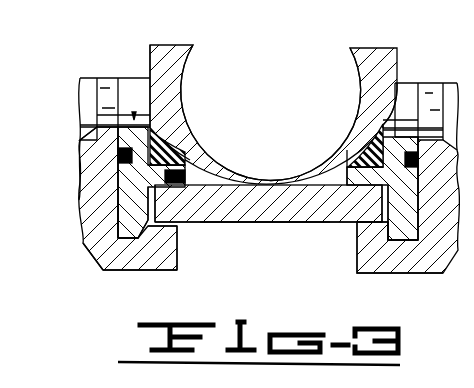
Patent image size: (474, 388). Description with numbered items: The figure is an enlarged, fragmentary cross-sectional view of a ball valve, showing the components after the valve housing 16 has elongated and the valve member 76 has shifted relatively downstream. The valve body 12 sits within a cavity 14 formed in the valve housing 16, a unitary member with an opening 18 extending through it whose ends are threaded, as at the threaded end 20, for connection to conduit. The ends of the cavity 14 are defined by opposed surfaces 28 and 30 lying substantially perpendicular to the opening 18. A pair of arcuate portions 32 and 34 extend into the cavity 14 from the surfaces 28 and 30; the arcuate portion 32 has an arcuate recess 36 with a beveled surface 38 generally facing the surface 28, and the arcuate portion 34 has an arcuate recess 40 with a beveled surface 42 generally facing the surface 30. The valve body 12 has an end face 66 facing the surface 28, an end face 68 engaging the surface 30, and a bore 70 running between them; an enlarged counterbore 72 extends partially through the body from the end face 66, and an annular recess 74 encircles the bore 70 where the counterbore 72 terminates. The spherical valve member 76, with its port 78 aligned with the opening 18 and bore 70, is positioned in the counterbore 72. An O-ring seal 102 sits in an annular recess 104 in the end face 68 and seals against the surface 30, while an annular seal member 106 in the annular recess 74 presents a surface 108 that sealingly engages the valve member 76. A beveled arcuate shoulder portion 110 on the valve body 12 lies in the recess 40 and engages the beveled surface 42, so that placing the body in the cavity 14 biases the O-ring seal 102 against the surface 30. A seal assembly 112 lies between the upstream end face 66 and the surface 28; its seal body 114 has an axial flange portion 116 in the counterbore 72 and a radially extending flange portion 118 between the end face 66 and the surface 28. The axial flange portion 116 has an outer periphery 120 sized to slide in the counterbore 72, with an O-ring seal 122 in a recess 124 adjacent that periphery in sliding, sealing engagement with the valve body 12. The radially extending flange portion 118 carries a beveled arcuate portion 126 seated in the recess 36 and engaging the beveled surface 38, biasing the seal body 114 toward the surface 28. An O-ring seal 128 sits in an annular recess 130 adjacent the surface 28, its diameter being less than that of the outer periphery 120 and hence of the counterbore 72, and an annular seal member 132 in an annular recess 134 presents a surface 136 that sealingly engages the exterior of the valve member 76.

The valve body 12 is at (253, 224).
The cavity 14 is at (253, 264).
The valve housing 16 is at (118, 271).
The opening 18 is at (102, 80).
The threaded end 20 is at (84, 88).
The surface 28 is at (118, 210).
The surface 30 is at (412, 211).
The arcuate portion 32 is at (170, 258).
The arcuate portion 34 is at (374, 275).
The arcuate recess 36 is at (127, 241).
The beveled surface 38 is at (140, 233).
The arcuate recess 40 is at (404, 242).
The beveled surface 42 is at (367, 241).
The end face 66 is at (160, 203).
The end face 68 is at (420, 188).
The bore 70 is at (393, 118).
The counterbore 72 is at (313, 185).
The annular recess 74 is at (355, 171).
The valve member 76 is at (368, 57).
The port 78 is at (263, 80).
The O-ring seal 102 is at (418, 159).
The annular recess 104 is at (414, 170).
The annular seal member 106 is at (374, 128).
The surface 108 is at (363, 148).
The beveled arcuate shoulder portion 110 is at (418, 230).
The seal assembly 112 is at (134, 112).
The seal body 114 is at (118, 123).
The axial flange portion 116 is at (201, 165).
The radially extending flange portion 118 is at (118, 230).
The outer periphery 120 is at (118, 186).
The O-ring seal 122 is at (185, 177).
The recess 124 is at (160, 172).
The beveled arcuate portion 126 is at (90, 252).
The O-ring seal 128 is at (118, 153).
The annular recess 130 is at (95, 133).
The annular seal member 132 is at (178, 137).
The annular recess 134 is at (153, 119).
The surface 136 is at (192, 146).